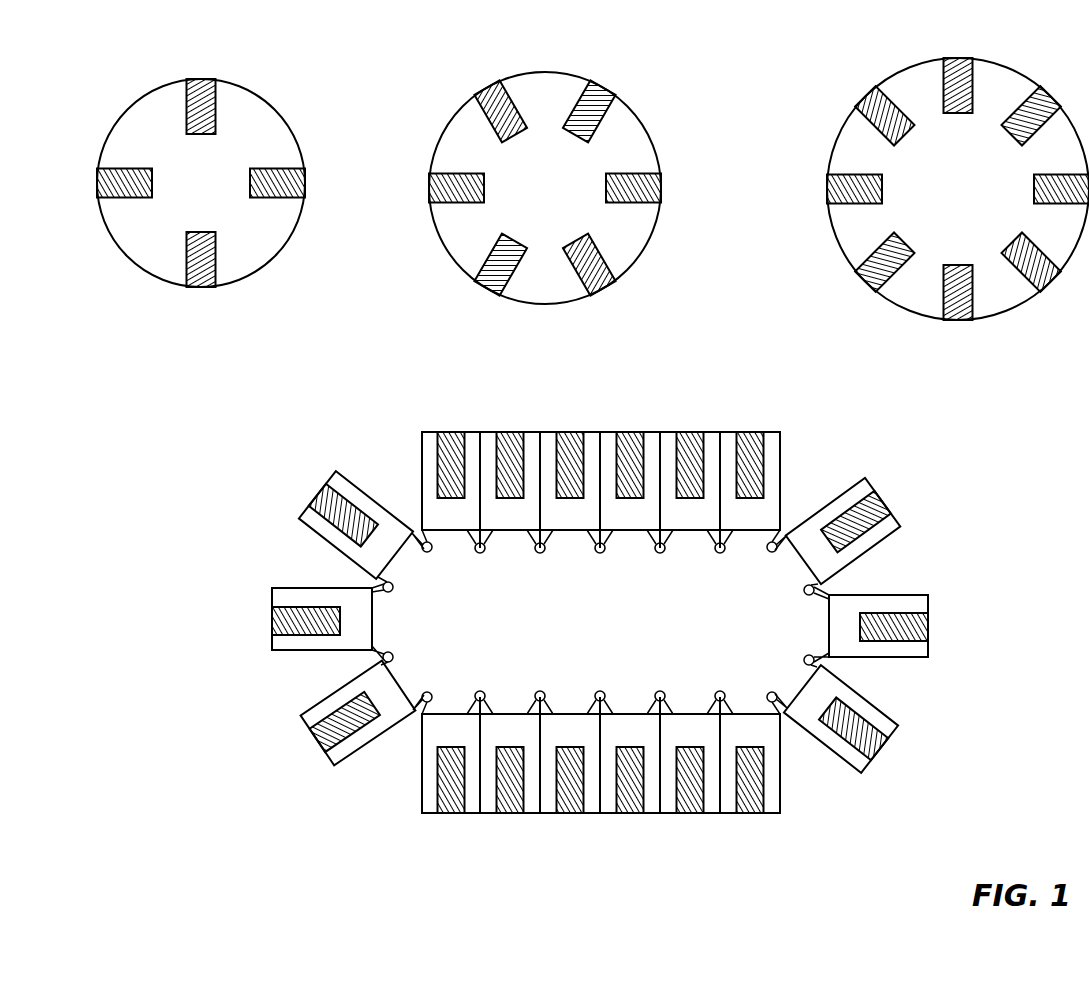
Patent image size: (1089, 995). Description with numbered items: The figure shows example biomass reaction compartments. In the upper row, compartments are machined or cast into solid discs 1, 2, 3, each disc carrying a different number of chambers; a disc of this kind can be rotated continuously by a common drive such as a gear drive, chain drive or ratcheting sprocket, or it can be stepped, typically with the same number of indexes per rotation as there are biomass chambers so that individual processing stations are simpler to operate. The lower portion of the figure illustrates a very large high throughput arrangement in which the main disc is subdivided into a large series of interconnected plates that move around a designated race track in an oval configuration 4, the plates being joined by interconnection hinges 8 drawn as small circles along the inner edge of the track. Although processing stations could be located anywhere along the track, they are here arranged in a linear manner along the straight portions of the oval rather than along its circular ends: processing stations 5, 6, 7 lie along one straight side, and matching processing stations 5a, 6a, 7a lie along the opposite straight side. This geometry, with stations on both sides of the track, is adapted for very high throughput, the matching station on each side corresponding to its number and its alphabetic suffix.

The solid disc 1 is at (111, 101).
The solid disc 2 is at (448, 75).
The solid disc 3 is at (853, 80).
The oval configuration 4 is at (303, 768).
The processing station 5 is at (446, 829).
The processing station 6 is at (586, 830).
The processing station 7 is at (724, 830).
The processing station 5a is at (726, 428).
The processing station 6a is at (590, 428).
The processing station 7a is at (448, 428).
The interconnection hinges 8 is at (482, 598).